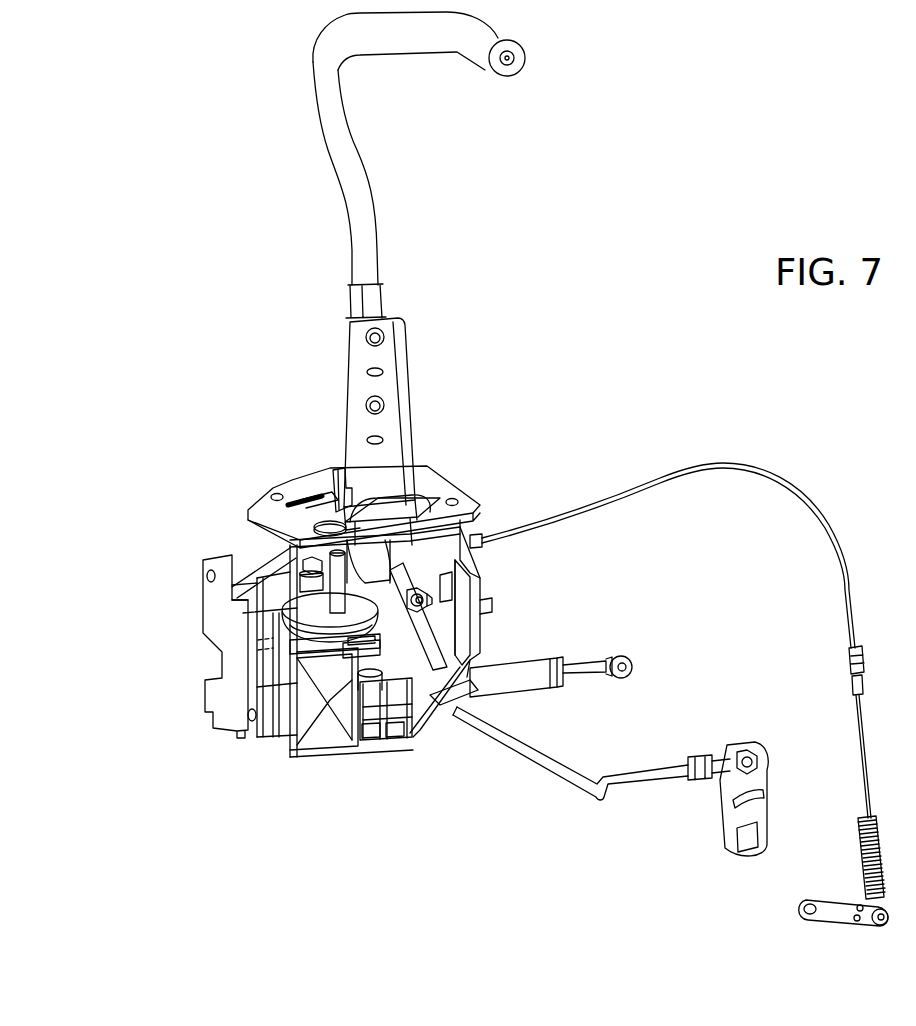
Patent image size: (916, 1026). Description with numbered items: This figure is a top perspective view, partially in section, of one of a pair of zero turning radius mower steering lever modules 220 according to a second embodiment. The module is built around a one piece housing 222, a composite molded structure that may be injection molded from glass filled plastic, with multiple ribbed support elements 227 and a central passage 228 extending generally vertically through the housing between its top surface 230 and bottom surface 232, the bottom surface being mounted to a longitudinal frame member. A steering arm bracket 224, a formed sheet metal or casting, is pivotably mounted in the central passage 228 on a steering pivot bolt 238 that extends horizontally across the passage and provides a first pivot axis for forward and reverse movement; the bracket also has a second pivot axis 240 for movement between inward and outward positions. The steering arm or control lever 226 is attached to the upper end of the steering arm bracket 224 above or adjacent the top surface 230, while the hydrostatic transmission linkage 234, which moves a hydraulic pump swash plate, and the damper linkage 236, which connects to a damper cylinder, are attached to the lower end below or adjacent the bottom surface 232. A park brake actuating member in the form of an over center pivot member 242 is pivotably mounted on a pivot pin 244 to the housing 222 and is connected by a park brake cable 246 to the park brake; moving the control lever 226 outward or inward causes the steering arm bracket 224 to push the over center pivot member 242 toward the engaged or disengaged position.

The steering lever module 220 is at (181, 243).
The housing 222 is at (197, 524).
The steering arm bracket 224 is at (394, 397).
The steering arm or control lever 226 is at (337, 125).
The ribbed support elements 227 is at (445, 645).
The central passage 228 is at (345, 485).
The top surface 230 is at (300, 482).
The bottom surface 232 is at (315, 757).
The hydrostatic transmission linkage 234 is at (527, 743).
The damper linkage 236 is at (510, 680).
The steering pivot bolt 238 is at (467, 603).
The second pivot axis 240 is at (358, 500).
The over center pivot member 242 is at (310, 637).
The pivot pin 244 is at (293, 570).
The park brake cable 246 is at (647, 483).